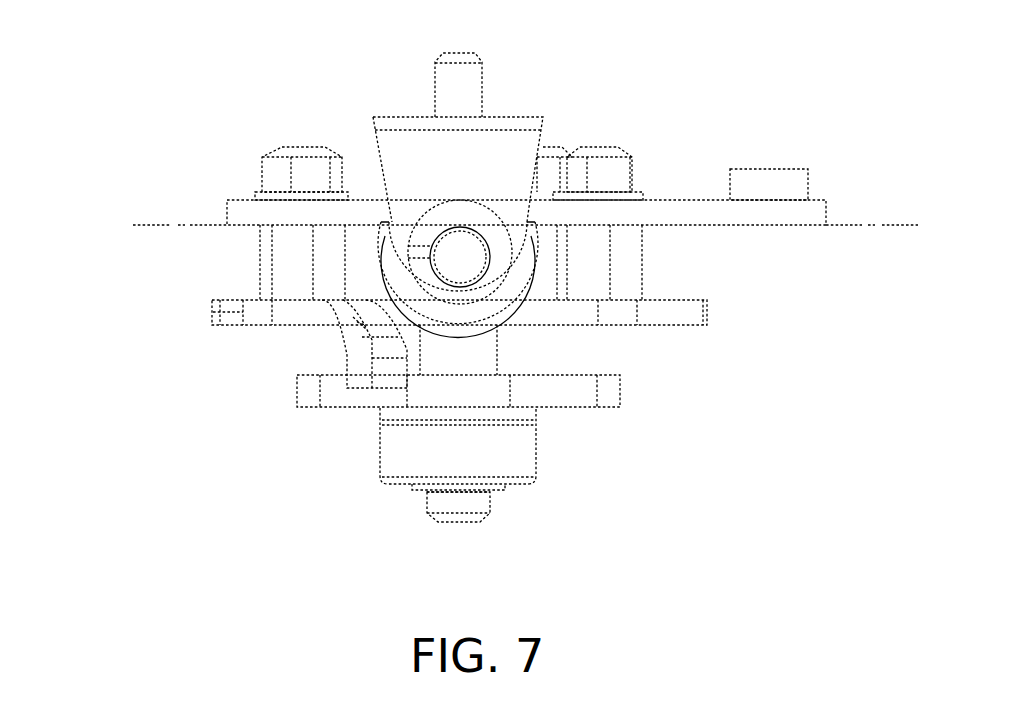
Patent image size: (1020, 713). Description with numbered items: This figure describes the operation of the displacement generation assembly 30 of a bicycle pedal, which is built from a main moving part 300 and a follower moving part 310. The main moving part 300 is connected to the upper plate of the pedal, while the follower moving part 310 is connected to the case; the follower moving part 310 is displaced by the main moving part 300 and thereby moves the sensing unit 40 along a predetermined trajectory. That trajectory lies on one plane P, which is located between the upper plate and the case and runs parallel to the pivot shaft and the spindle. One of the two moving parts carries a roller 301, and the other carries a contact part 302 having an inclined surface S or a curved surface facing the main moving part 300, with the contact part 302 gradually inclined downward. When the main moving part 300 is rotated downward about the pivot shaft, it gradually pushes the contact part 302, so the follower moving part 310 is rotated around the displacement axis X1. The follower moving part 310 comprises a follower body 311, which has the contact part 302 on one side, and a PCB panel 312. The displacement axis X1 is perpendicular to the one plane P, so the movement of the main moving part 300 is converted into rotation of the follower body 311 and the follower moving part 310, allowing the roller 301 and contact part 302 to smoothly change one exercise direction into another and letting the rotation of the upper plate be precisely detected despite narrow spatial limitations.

The displacement generation assembly 30 is at (42, 37).
The sensing unit 40 is at (769, 178).
The one plane P is at (908, 222).
The follower moving part 310 is at (72, 200).
The follower body 311 is at (228, 318).
The PCB panel 312 is at (240, 212).
The main moving part 300 is at (589, 287).
The roller 301 is at (527, 257).
The contact part 302 is at (355, 343).
The inclined surface S is at (350, 325).
The displacement axis X1 is at (462, 502).